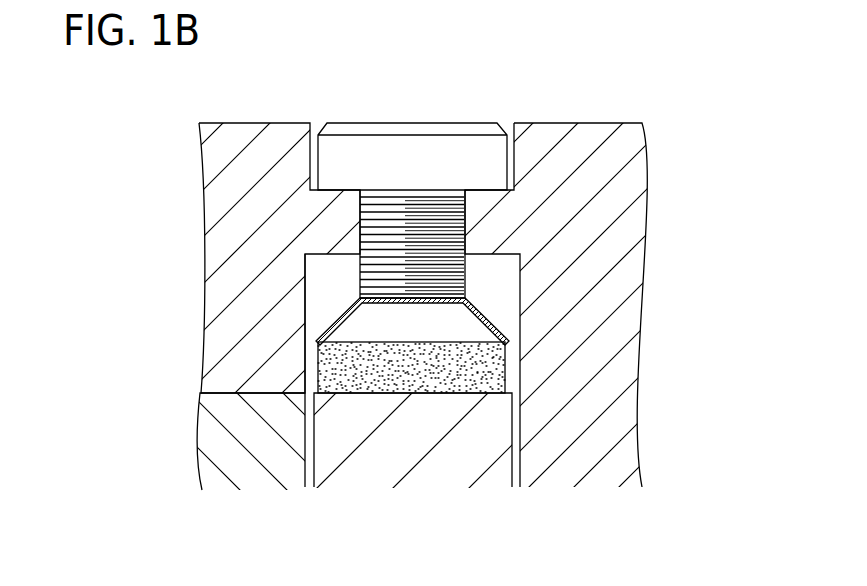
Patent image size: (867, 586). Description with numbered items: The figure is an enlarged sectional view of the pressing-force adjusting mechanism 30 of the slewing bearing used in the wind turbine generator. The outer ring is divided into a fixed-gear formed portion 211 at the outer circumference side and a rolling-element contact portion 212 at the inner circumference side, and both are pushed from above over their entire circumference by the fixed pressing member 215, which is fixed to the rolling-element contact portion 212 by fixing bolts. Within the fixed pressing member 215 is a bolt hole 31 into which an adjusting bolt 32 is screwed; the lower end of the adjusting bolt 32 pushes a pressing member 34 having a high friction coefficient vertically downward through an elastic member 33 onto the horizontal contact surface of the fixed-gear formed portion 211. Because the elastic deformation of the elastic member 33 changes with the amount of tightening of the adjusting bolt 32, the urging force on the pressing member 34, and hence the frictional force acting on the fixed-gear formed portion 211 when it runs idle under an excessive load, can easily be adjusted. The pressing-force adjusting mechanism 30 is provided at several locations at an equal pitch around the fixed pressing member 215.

The pressing-force adjusting mechanism 30 is at (486, 216).
The bolt hole 31 is at (465, 256).
The adjusting bolt 32 is at (448, 128).
The elastic member 33 is at (487, 325).
The pressing member 34 is at (505, 368).
The fixed-gear formed portion 211 is at (435, 470).
The rolling-element contact portion 212 is at (213, 437).
The fixed pressing member 215 is at (589, 123).